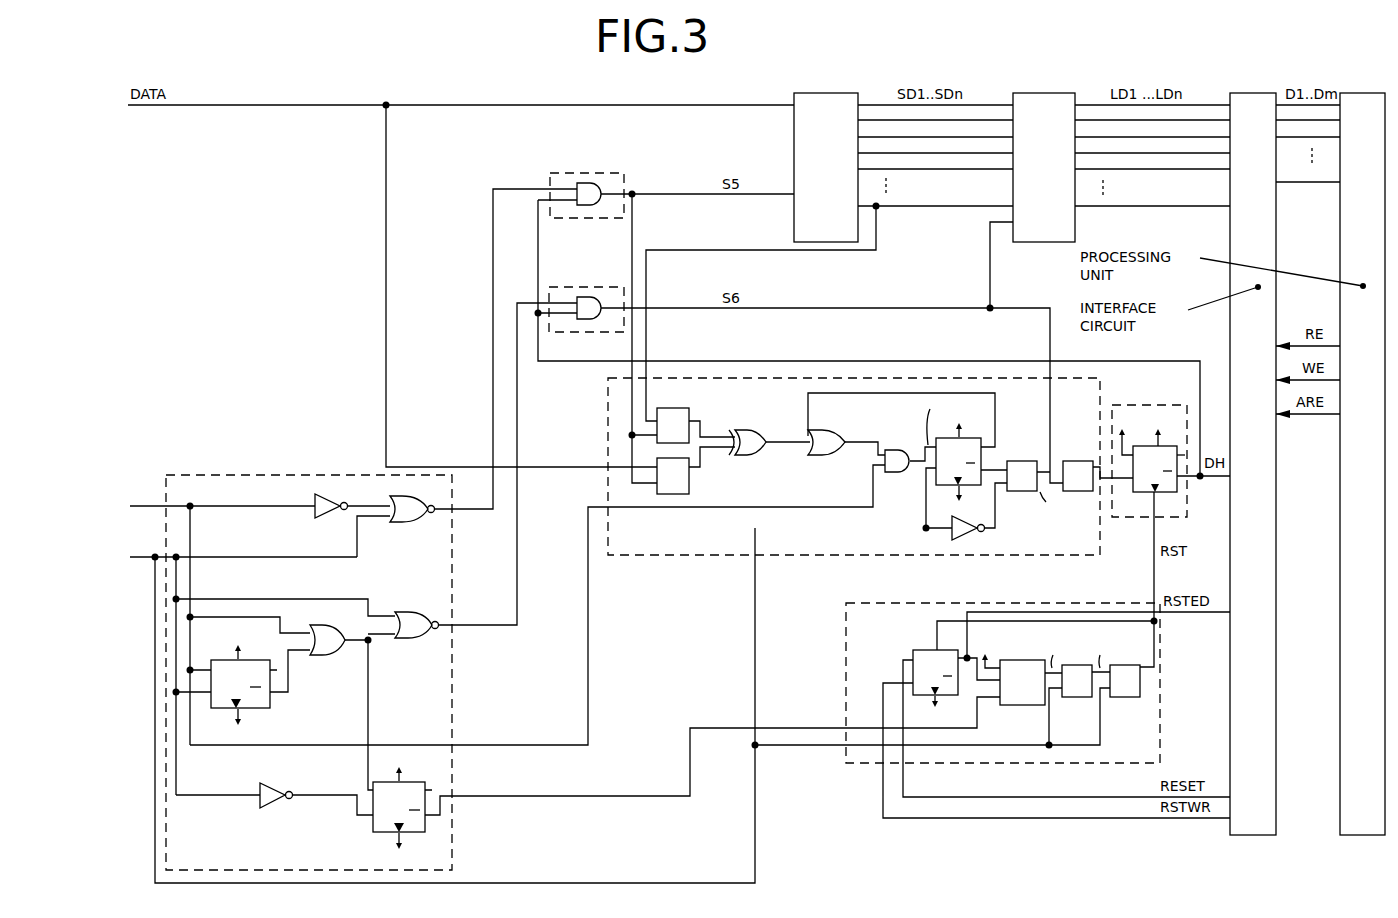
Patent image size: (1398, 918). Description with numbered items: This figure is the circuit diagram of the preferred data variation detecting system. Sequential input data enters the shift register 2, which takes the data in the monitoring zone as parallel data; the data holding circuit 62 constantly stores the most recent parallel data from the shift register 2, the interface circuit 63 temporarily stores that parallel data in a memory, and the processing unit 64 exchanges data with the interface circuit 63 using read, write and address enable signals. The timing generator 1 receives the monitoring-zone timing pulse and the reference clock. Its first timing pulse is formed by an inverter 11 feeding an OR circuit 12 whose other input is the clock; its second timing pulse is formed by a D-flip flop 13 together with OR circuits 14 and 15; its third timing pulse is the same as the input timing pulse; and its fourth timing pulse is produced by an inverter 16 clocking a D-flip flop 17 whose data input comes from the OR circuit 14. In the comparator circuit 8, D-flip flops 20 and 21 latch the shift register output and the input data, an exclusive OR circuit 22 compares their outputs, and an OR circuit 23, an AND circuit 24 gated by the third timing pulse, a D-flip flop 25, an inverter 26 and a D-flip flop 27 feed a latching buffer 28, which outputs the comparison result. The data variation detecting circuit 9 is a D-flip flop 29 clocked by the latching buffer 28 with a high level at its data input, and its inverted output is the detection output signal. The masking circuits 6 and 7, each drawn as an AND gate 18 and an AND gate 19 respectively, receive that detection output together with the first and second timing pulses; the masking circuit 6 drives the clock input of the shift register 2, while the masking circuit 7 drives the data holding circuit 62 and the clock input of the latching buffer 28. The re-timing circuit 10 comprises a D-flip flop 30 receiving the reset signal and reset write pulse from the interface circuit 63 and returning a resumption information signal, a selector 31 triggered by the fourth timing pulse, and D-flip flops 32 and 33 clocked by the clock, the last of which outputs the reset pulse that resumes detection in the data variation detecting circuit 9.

The timing generator 1 is at (212, 474).
The shift register 2 is at (816, 94).
The masking circuit 6 is at (587, 189).
The masking circuit 7 is at (586, 303).
The comparator circuit 8 is at (680, 558).
The data variation detecting circuit 9 is at (1133, 522).
The re-timing circuit 10 is at (850, 764).
The inverter 11 is at (340, 512).
The OR circuit 12 is at (418, 520).
The D-flip flop 13 is at (270, 706).
The OR circuit 14 is at (325, 656).
The OR circuit 15 is at (412, 611).
The inverter 16 is at (284, 782).
The D-flip flop 17 is at (415, 781).
The AND gate 18 is at (585, 206).
The AND gate 19 is at (590, 320).
The D-flip flop 20 is at (688, 416).
The D-flip flop 21 is at (690, 492).
The exclusive OR circuit 22 is at (753, 430).
The OR circuit 23 is at (824, 430).
The AND circuit 24 is at (903, 450).
The D-flip flop 25 is at (936, 480).
The inverter 26 is at (975, 540).
The D-flip flop 27 is at (1022, 460).
The latching buffer 28 is at (1078, 460).
The D-flip flop 29 is at (1148, 445).
The D-flip flop 30 is at (922, 650).
The selector 31 is at (1026, 706).
The D-flip flop 32 is at (1078, 698).
The D-flip flop 33 is at (1126, 698).
The data holding circuit 62 is at (1034, 94).
The interface circuit 63 is at (1242, 92).
The processing unit 64 is at (1351, 92).